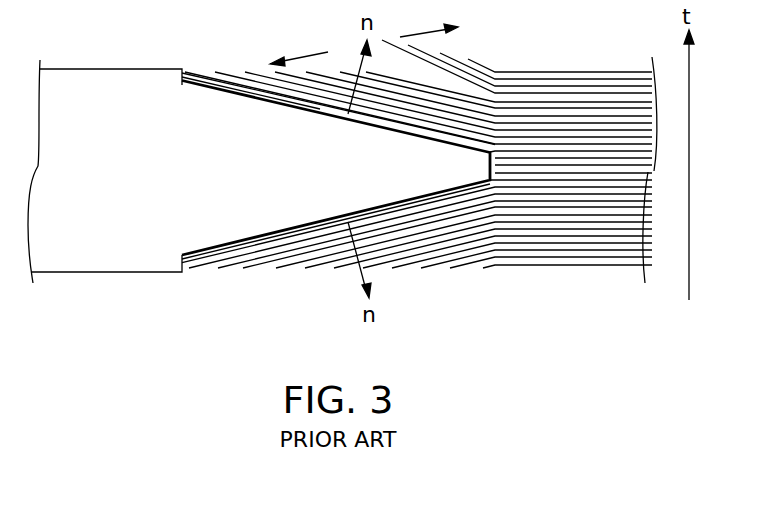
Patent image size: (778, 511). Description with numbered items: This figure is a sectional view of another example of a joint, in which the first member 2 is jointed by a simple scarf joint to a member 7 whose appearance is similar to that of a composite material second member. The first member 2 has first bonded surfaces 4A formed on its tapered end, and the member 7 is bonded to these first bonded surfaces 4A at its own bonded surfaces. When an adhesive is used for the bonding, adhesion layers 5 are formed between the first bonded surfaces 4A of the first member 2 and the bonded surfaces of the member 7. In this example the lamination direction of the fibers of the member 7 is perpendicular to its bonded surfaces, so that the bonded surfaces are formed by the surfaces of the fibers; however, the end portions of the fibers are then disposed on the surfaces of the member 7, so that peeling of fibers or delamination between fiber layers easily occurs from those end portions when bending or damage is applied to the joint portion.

The first member 2 is at (127, 68).
The first bonded surfaces 4A is at (198, 73).
The adhesion layers 5 is at (243, 92).
The member 7 is at (589, 72).